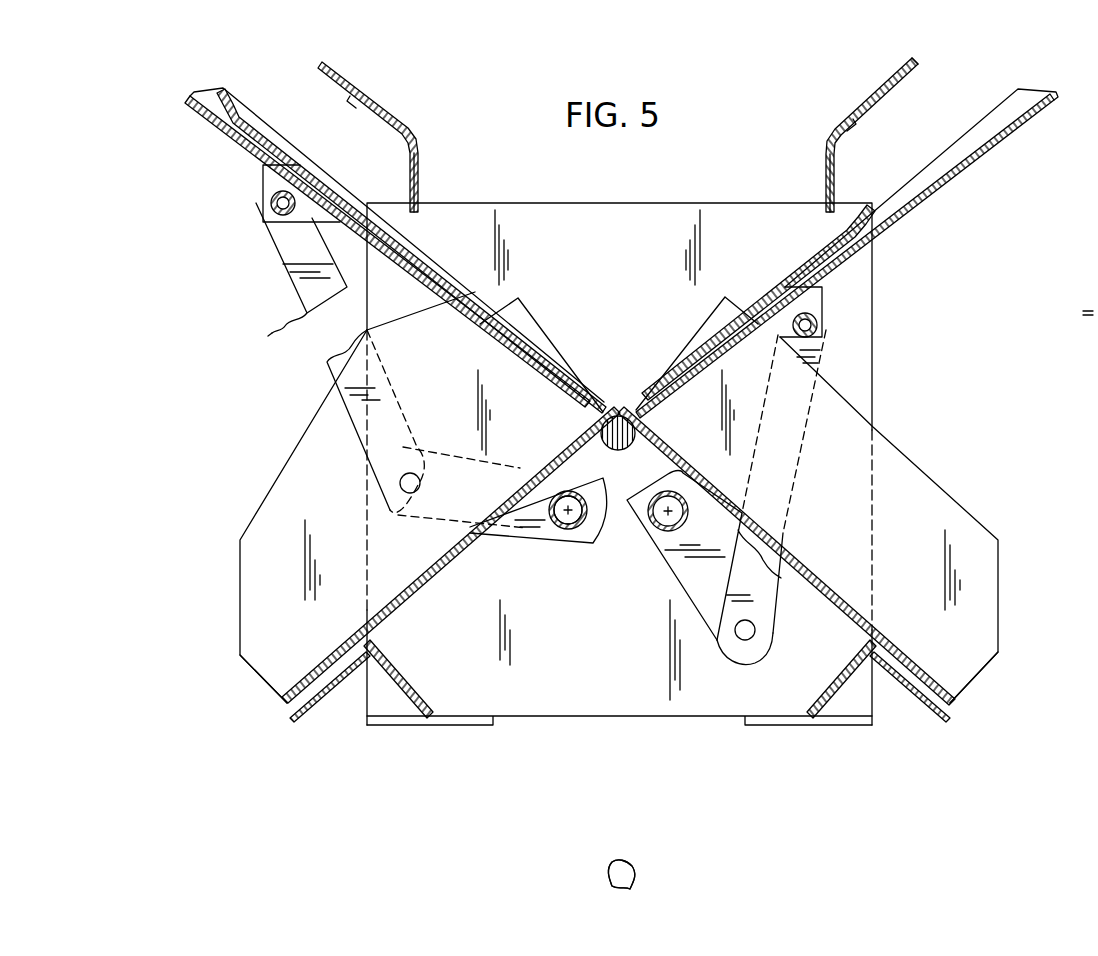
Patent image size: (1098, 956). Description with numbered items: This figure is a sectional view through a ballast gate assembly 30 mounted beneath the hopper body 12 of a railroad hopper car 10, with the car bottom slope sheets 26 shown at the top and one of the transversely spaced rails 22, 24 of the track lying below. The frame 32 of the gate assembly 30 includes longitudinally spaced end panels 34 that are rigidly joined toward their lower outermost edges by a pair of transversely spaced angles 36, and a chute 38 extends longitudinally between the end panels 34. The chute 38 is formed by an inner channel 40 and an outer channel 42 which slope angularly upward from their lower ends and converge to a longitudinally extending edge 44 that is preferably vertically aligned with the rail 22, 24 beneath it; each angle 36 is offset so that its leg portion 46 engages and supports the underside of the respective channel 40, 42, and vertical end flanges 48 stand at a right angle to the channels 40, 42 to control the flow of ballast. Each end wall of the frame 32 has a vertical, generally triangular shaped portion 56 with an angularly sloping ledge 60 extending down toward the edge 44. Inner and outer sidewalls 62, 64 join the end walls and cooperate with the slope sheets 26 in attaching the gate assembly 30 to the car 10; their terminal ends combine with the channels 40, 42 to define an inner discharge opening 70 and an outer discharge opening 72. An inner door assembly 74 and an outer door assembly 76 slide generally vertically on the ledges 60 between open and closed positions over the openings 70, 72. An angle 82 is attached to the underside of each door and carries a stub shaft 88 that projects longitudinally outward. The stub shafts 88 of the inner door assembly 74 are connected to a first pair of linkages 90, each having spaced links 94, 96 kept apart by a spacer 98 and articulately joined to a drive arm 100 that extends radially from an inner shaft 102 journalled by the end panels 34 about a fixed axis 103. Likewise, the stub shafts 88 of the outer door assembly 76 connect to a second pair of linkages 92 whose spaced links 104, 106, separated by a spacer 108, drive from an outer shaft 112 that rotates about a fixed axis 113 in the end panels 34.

The railroad hopper car 10 is at (937, 63).
The hopper body 12 is at (910, 55).
The rail 22 is at (632, 865).
The rail 24 is at (621, 874).
The car bottom slope sheets 26 is at (338, 60).
The gate assembly 30 is at (706, 115).
The frame 32 is at (900, 408).
The end panels 34 is at (550, 703).
The angles 36 is at (402, 690).
The chute 38 is at (443, 578).
The inner channel 40 is at (258, 658).
The outer channel 42 is at (980, 650).
The edge 44 is at (618, 414).
The leg portion 46 is at (330, 683).
The vertical end flanges 48 is at (240, 555).
The triangular shaped portion 56 is at (628, 245).
The sloping ledge 60 is at (203, 97).
The inner sidewall 62 is at (420, 178).
The outer sidewall 64 is at (830, 178).
The inner discharge opening 70 is at (477, 283).
The outer discharge opening 72 is at (746, 283).
The inner door assembly 74 is at (270, 125).
The outer door assembly 76 is at (848, 212).
The angle 82 is at (263, 180).
The stub shaft 88 is at (283, 217).
The linkages 90 is at (545, 545).
The linkages 92 is at (660, 597).
The link 94 is at (348, 392).
The link 96 is at (278, 328).
The spacer 98 is at (276, 200).
The drive arm 100 is at (512, 525).
The inner shaft 102 is at (558, 503).
The fixed axis 103 is at (570, 508).
The link 104 is at (773, 590).
The link 106 is at (832, 326).
The spacer 108 is at (830, 338).
The outer shaft 112 is at (663, 586).
The fixed axis 113 is at (666, 514).